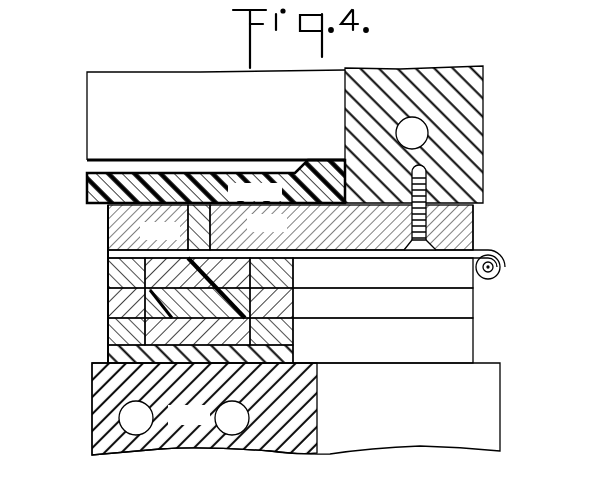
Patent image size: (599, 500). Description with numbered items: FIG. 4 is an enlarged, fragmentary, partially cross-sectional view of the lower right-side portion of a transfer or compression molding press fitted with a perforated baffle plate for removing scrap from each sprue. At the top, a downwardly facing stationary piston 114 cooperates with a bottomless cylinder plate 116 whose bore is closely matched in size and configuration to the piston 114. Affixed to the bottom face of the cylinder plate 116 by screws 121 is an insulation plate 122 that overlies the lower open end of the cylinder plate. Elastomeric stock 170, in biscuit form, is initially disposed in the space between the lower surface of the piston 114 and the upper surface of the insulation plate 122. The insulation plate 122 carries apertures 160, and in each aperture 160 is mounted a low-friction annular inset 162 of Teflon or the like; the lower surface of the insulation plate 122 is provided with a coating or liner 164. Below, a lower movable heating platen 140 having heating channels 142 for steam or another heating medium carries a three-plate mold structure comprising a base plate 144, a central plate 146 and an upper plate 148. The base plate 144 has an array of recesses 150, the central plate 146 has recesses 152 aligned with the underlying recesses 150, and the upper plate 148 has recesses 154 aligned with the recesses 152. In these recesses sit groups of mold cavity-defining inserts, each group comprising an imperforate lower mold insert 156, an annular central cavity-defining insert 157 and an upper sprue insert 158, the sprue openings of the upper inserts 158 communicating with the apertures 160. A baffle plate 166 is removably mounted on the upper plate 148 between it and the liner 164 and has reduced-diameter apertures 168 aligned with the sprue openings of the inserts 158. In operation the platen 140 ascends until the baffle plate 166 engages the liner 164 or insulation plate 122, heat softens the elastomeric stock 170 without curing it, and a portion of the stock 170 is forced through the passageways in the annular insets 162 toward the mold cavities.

The stationary piston 114 is at (197, 90).
The cylinder plate 116 is at (440, 82).
The screws 121 is at (428, 180).
The insulation plate 122 is at (472, 217).
The lower movable heating platen 140 is at (452, 436).
The heating channels 142 is at (217, 412).
The base plate 144 is at (470, 338).
The central plate 146 is at (470, 300).
The upper plate 148 is at (470, 278).
The recesses 150 is at (297, 332).
The recesses 152 is at (297, 302).
The recesses 154 is at (297, 273).
The imperforate lower mold insert 156 is at (150, 330).
The annular central cavity-defining insert 157 is at (142, 306).
The upper sprue insert 158 is at (150, 272).
The apertures 160 is at (232, 194).
The low-friction annular inset 162 is at (226, 226).
The liner 164 is at (473, 250).
The baffle plate 166 is at (505, 265).
The apertures 168 is at (148, 227).
The elastomeric stock 170 is at (100, 184).